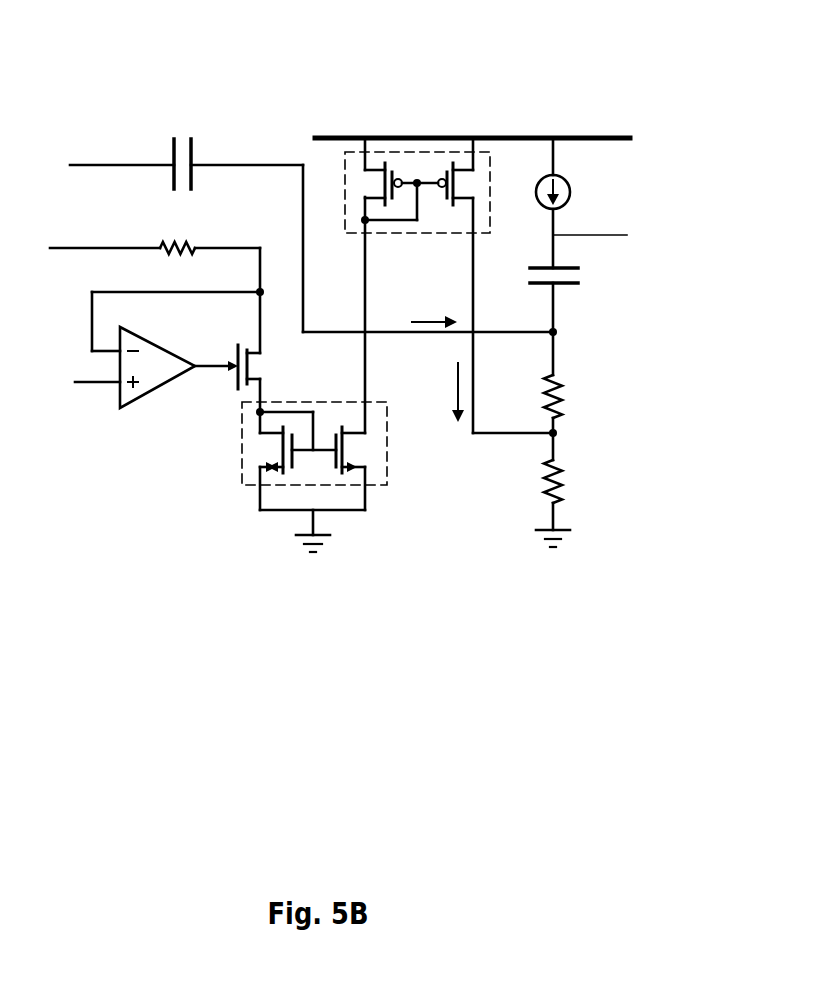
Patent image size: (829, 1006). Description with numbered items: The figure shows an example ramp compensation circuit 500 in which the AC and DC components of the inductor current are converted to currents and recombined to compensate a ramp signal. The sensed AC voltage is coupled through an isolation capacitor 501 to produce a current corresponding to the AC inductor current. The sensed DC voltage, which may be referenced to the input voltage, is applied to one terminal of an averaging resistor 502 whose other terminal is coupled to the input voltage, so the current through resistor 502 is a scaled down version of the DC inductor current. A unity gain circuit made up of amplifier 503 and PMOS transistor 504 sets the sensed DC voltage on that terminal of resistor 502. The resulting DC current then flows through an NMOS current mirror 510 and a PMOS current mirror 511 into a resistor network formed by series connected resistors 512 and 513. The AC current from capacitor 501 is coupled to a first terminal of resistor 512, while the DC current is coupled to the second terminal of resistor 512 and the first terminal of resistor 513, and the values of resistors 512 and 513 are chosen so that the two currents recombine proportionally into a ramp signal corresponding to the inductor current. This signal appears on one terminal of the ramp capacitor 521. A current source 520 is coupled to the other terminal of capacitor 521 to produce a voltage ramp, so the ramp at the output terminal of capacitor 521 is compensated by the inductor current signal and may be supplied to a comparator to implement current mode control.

The ramp compensation circuit 500 is at (68, 25).
The capacitor 501 is at (165, 193).
The resistor 502 is at (158, 270).
The amplifier 503 is at (183, 414).
The PMOS transistor 504 is at (298, 371).
The NMOS current mirror 510 is at (250, 487).
The PMOS current mirror 511 is at (460, 234).
The resistor 512 is at (600, 435).
The resistor 513 is at (600, 525).
The current source 520 is at (618, 224).
The capacitor 521 is at (620, 299).